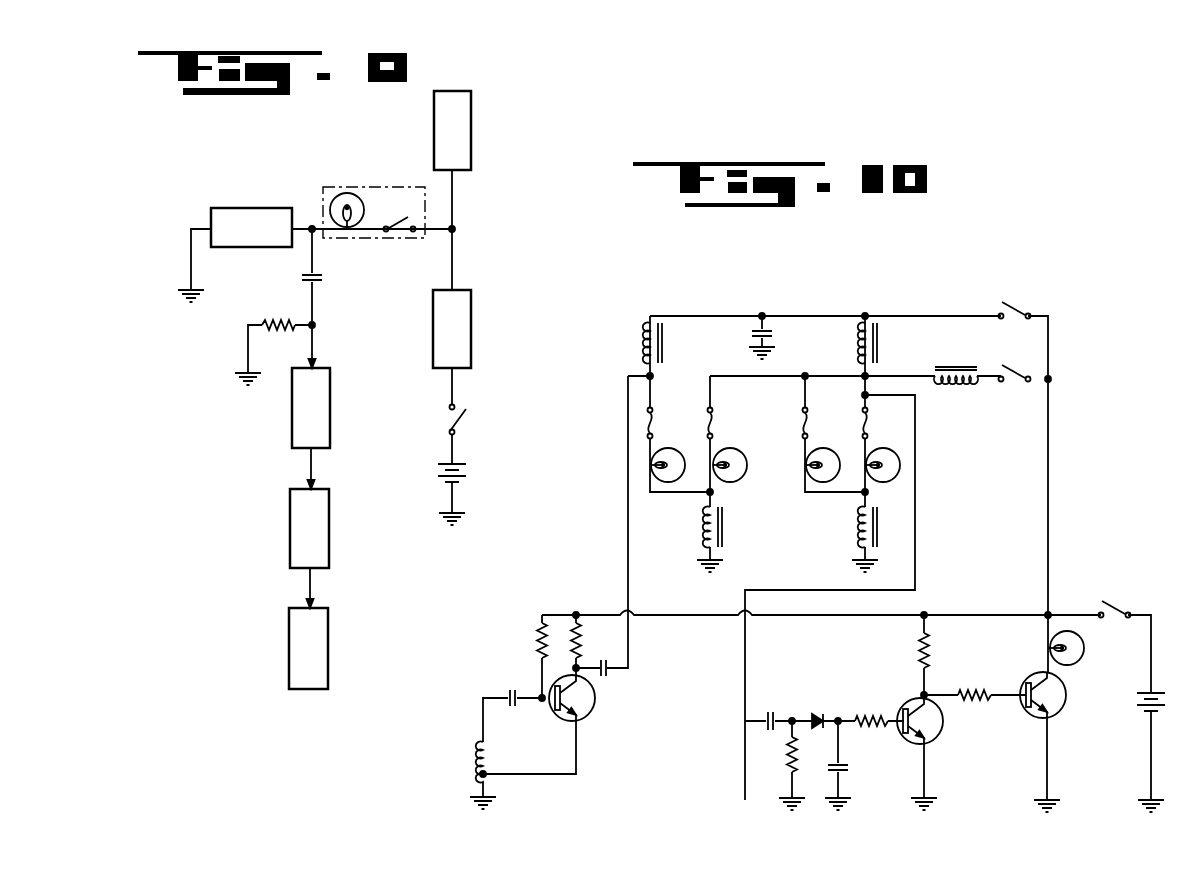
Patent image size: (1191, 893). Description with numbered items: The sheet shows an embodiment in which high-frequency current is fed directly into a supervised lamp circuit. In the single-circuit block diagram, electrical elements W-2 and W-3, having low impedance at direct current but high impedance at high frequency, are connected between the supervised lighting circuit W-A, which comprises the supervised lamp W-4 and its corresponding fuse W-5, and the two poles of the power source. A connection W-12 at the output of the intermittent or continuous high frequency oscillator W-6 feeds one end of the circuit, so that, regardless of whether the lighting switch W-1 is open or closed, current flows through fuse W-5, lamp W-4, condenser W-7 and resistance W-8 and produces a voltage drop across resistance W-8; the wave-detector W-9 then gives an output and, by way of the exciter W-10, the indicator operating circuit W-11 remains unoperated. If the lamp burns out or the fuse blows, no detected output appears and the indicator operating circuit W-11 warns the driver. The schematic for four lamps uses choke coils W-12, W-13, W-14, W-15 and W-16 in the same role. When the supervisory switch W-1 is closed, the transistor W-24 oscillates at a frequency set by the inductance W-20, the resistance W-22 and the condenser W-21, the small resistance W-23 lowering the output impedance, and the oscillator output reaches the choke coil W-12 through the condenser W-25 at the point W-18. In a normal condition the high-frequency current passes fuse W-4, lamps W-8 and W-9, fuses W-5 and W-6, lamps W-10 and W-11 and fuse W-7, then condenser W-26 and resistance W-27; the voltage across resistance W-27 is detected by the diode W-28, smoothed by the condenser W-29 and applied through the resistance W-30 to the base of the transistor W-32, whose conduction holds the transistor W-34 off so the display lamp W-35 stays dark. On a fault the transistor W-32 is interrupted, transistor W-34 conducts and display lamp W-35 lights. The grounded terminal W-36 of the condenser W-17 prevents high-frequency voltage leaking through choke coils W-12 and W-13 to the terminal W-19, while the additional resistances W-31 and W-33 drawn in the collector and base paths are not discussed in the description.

In FIG. 9, the lighting switch W-1 is at (466, 410).
In FIG. 10, the lighting switch W-1 is at (1112, 604).
In FIG. 9, the electrical element W-2 is at (471, 322).
In FIG. 10, the electrical element W-2 is at (1014, 309).
In FIG. 9, the electrical element W-3 is at (248, 217).
In FIG. 10, the electrical element W-3 is at (1010, 384).
In FIG. 9, the supervised lamp W-4 is at (348, 227).
In FIG. 10, the supervised lamp W-4 is at (648, 421).
In FIG. 9, the fuse W-5 is at (395, 233).
In FIG. 10, the fuse W-5 is at (708, 422).
In FIG. 9, the high frequency oscillator W-6 is at (471, 131).
In FIG. 10, the high frequency oscillator W-6 is at (803, 422).
In FIG. 9, the condenser W-7 is at (323, 277).
In FIG. 10, the condenser W-7 is at (863, 422).
In FIG. 9, the resistance W-8 is at (278, 324).
In FIG. 10, the resistance W-8 is at (673, 481).
In FIG. 9, the wave-detector W-9 is at (322, 408).
In FIG. 10, the wave-detector W-9 is at (744, 478).
In FIG. 9, the exciter W-10 is at (329, 516).
In FIG. 10, the exciter W-10 is at (828, 481).
In FIG. 9, the indicator operating circuit W-11 is at (328, 636).
In FIG. 10, the indicator operating circuit W-11 is at (890, 481).
In FIG. 9, the connection W-12 is at (452, 229).
In FIG. 10, the connection W-12 is at (662, 343).
In FIG. 9, the choke coil W-13 is at (312, 229).
In FIG. 10, the choke coil W-13 is at (862, 340).
In FIG. 10, the choke coil W-14 is at (952, 371).
In FIG. 10, the choke coil W-15 is at (723, 540).
In FIG. 10, the choke coil W-16 is at (878, 531).
In FIG. 10, the condenser W-17 is at (773, 335).
In FIG. 10, the connection point W-18 is at (647, 374).
In FIG. 10, the terminal W-19 is at (866, 397).
In FIG. 10, the inductance W-20 is at (478, 752).
In FIG. 10, the condenser W-21 is at (510, 688).
In FIG. 10, the resistance W-22 is at (540, 642).
In FIG. 10, the resistance W-23 is at (576, 614).
In FIG. 10, the transistor W-24 is at (590, 712).
In FIG. 10, the condenser W-25 is at (608, 670).
In FIG. 10, the condenser W-26 is at (767, 729).
In FIG. 10, the resistance W-27 is at (790, 761).
In FIG. 10, the diode W-28 is at (816, 712).
In FIG. 10, the condenser W-29 is at (849, 768).
In FIG. 10, the resistance W-30 is at (870, 716).
In FIG. 10, the resistor W-31 is at (924, 650).
In FIG. 10, the transistor W-32 is at (942, 730).
In FIG. 10, the resistor W-33 is at (975, 692).
In FIG. 10, the transistor W-34 is at (1064, 705).
In FIG. 10, the display lamp W-35 is at (1084, 648).
In FIG. 10, the terminal W-36 is at (866, 316).
In FIG. 9, the supervised lighting circuit W-A is at (380, 187).